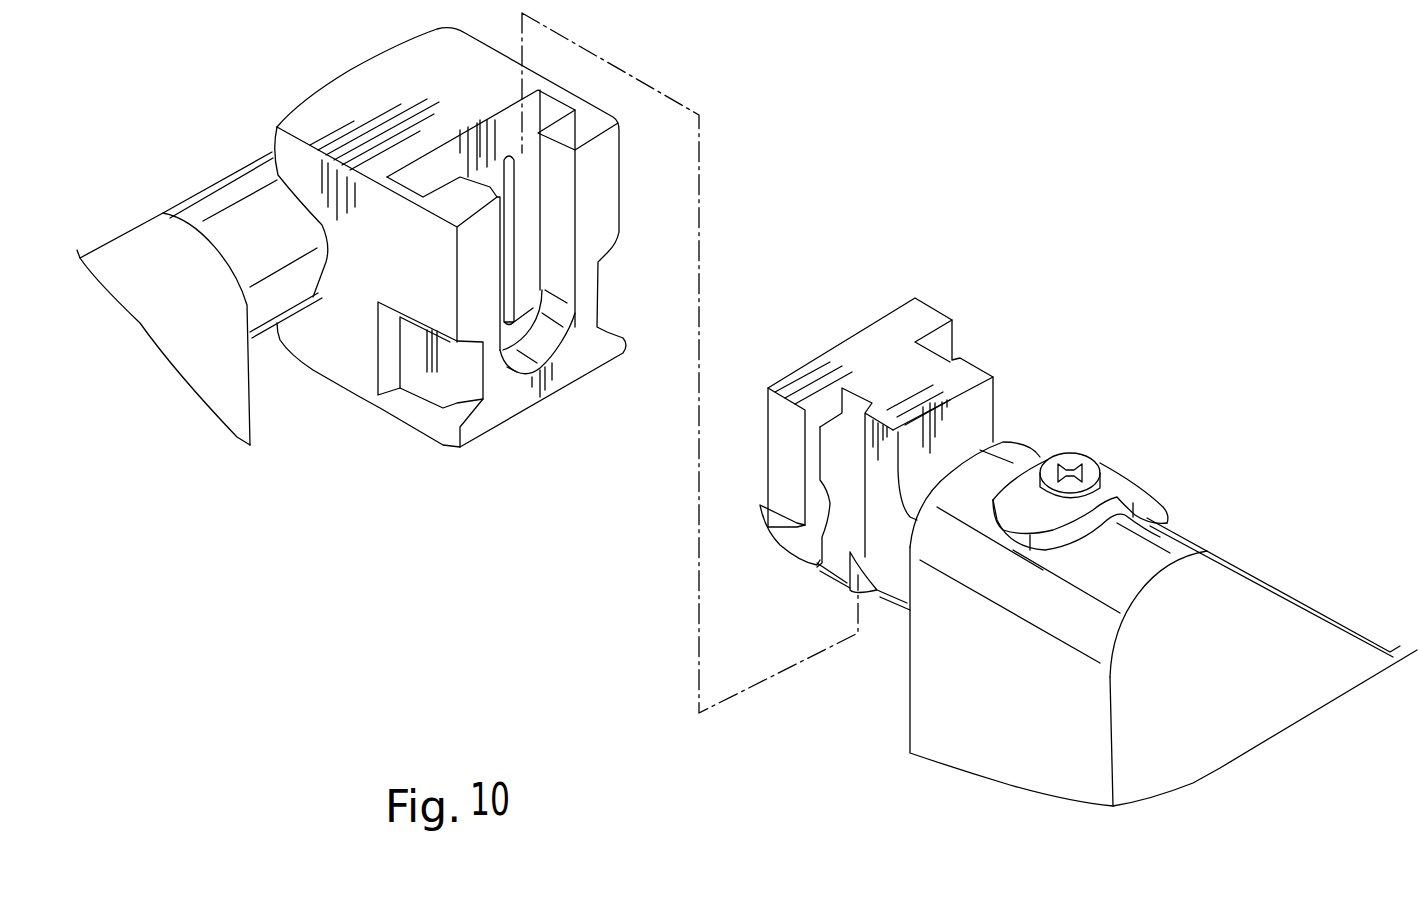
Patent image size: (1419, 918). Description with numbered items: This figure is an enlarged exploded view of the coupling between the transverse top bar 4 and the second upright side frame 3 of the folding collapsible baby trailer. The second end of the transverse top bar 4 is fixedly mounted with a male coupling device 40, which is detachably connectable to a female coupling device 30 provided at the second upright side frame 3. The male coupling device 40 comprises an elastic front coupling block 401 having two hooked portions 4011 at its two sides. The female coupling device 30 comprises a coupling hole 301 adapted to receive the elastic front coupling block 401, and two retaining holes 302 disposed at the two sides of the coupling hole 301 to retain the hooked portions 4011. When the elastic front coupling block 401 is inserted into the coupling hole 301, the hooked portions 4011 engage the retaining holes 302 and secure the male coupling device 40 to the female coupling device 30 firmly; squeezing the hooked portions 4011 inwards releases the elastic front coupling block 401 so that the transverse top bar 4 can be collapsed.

The second upright side frame 3 is at (198, 176).
The female coupling device 30 is at (542, 75).
The coupling hole 301 is at (410, 313).
The retaining holes 302 is at (418, 413).
The male coupling device 40 is at (897, 348).
The elastic front coupling block 401 is at (780, 438).
The hooked portions 4011 is at (775, 530).
The transverse top bar 4 is at (1277, 528).